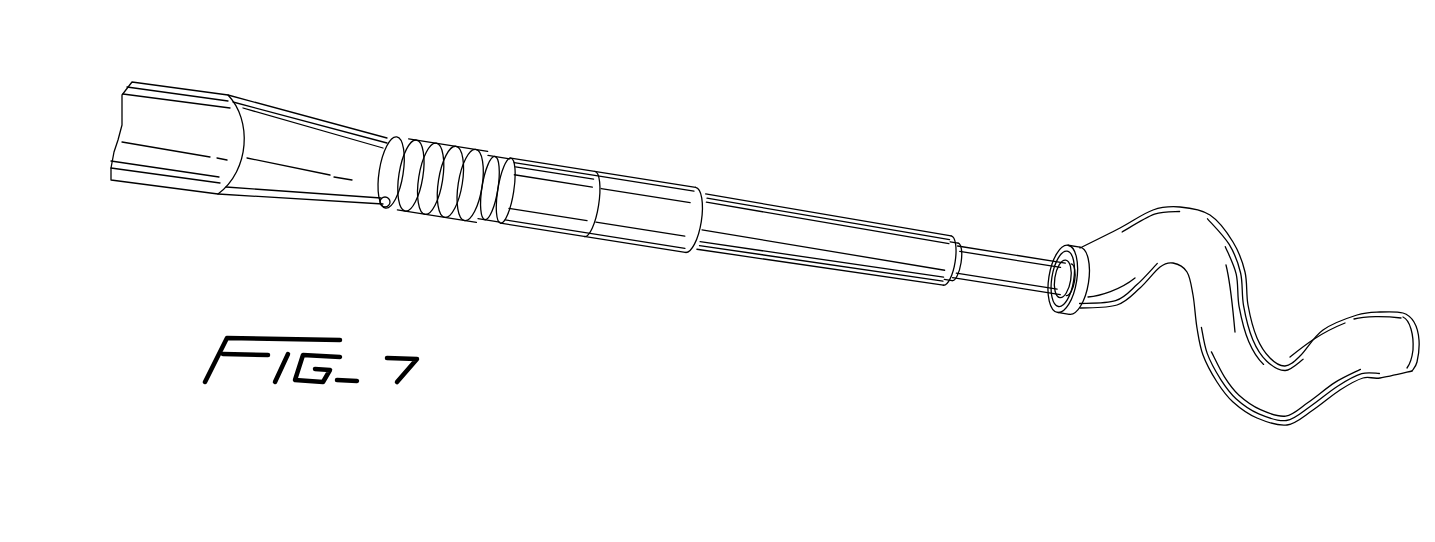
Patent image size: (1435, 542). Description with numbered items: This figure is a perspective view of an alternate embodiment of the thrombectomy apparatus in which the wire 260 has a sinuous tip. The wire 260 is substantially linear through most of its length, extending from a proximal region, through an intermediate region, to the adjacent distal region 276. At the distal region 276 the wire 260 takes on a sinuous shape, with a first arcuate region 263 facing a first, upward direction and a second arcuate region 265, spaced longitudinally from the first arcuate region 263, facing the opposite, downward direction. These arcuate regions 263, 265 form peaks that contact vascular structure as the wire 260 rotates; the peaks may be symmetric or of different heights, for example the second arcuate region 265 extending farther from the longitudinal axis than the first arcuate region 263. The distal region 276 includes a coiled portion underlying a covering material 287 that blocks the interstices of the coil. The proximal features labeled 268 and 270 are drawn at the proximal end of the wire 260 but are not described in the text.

The handle 268 is at (305, 88).
The threaded portion 270 is at (440, 152).
The wire 260 is at (658, 146).
The covering material 287 is at (1090, 257).
The first arcuate region 263 is at (1177, 222).
The second arcuate region 265 is at (1277, 418).
The distal region 276 is at (1250, 283).